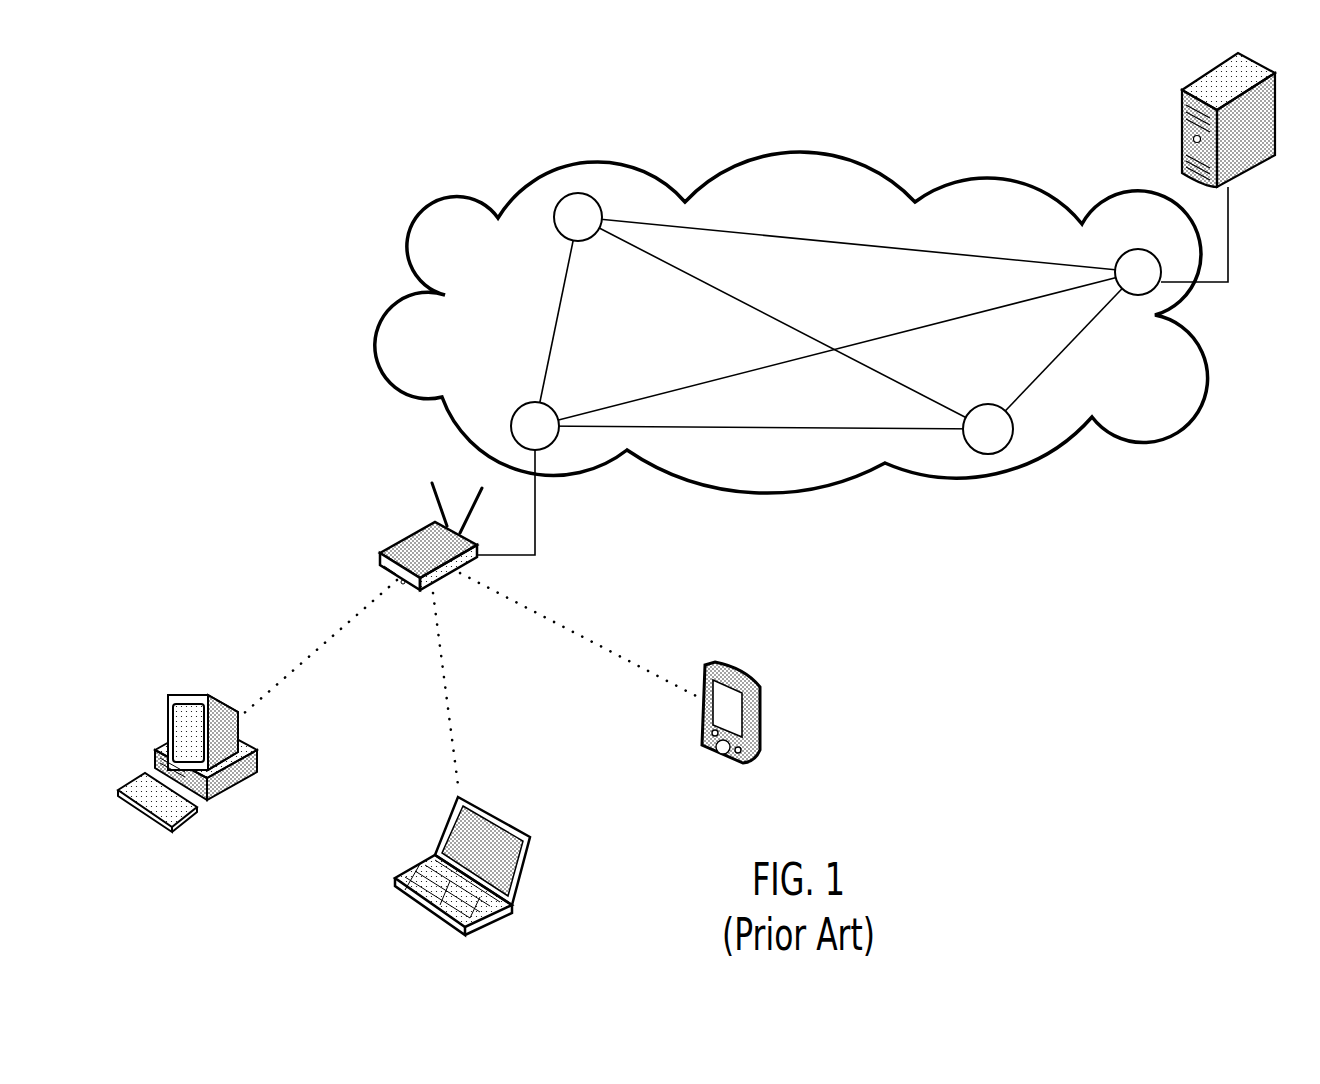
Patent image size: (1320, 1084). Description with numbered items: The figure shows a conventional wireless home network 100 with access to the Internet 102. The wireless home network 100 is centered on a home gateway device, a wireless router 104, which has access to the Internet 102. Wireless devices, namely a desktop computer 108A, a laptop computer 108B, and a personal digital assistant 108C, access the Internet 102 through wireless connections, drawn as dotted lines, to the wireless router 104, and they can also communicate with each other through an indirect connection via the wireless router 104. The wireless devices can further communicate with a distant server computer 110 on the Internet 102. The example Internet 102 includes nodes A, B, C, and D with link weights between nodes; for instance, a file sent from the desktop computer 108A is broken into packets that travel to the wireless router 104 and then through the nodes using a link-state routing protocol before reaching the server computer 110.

The wireless home network 100 is at (245, 550).
The Internet 102 is at (507, 198).
The wireless router 104 is at (395, 550).
The desktop computer 108A is at (231, 788).
The laptop computer 108B is at (530, 837).
The personal digital assistant (PDA) 108C is at (752, 680).
The server computer 110 is at (1182, 112).